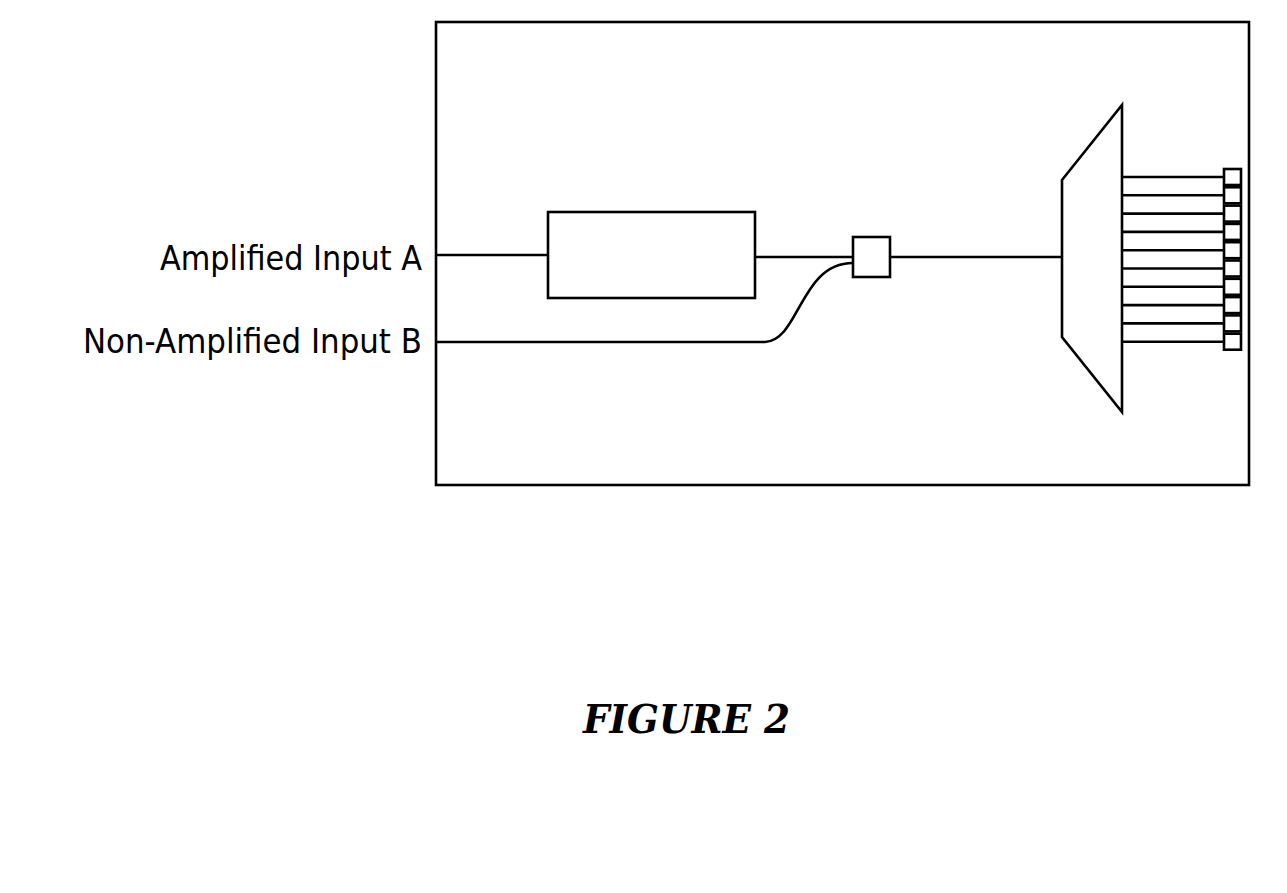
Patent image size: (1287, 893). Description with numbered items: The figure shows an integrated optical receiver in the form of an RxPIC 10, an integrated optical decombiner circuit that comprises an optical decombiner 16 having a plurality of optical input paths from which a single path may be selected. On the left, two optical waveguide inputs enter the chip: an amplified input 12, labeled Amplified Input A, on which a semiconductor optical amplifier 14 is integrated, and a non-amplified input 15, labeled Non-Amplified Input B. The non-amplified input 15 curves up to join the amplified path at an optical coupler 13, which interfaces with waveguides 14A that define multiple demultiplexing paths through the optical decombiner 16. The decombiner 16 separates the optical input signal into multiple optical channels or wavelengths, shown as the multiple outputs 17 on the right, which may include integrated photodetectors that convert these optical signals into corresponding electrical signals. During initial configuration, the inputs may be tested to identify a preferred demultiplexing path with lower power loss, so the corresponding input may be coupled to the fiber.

The RxPIC 10 is at (842, 253).
The amplified input 12 is at (458, 255).
The optical coupler 13 is at (875, 262).
The semiconductor optical amplifier 14 is at (713, 278).
The waveguides 14A is at (927, 257).
The non-amplified input 15 is at (808, 303).
The optical decombiner 16 is at (1112, 277).
The multiple outputs 17 is at (1222, 352).